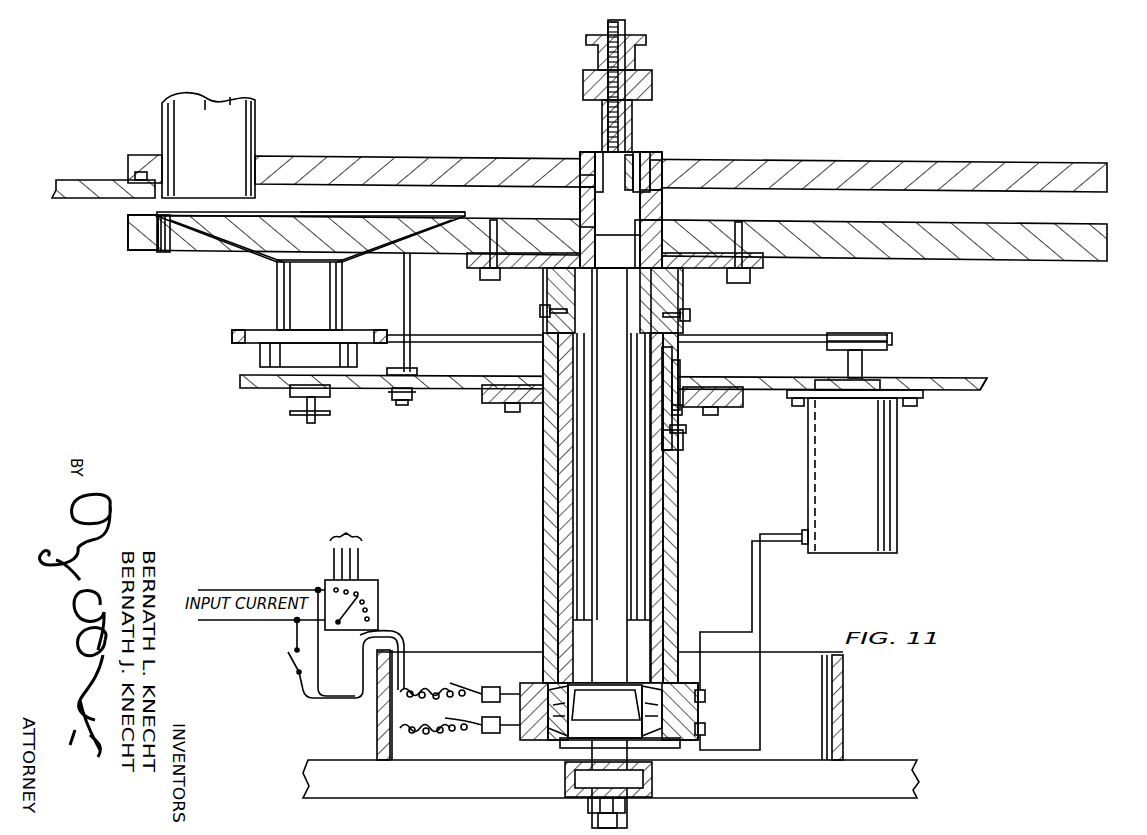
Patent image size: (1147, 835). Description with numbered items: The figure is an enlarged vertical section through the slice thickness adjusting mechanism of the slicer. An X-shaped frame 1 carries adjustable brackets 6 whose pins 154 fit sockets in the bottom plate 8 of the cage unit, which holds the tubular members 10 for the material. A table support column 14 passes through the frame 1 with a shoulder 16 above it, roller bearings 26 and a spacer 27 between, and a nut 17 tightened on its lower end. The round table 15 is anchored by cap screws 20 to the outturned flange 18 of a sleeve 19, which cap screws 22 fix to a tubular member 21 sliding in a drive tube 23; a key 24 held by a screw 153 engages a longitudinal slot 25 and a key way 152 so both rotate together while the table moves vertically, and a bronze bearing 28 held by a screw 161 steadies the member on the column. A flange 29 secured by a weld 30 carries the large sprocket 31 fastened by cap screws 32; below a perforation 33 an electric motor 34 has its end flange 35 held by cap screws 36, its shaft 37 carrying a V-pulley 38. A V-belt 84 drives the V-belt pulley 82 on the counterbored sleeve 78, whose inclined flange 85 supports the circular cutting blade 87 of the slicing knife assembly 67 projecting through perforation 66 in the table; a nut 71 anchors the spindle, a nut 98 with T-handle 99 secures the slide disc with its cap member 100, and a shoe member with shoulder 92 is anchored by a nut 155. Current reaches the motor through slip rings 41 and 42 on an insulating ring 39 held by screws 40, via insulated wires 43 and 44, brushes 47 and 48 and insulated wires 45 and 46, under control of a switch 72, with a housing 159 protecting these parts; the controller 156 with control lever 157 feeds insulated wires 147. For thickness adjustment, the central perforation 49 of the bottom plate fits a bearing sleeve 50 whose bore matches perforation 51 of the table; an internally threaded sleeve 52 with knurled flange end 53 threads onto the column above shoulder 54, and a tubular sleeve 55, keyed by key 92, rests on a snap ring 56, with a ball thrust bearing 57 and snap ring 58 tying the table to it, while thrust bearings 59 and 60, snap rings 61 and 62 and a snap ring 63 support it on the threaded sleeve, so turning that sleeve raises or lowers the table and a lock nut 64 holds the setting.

The X-shaped frame 1 is at (420, 753).
The adjustable brackets 6 is at (90, 200).
The bottom plate 8 is at (135, 155).
The tubular members 10 is at (162, 122).
The table support column 14 is at (626, 25).
The table 15 is at (128, 235).
The shoulder 16 is at (605, 683).
The nut 17 is at (590, 805).
The outturned flange 18 is at (470, 258).
The sleeve 19 is at (547, 292).
The cap screws 20 is at (484, 278).
The tubular member 21 is at (680, 303).
The cap screws 22 is at (540, 312).
The drive tube 23 is at (680, 523).
The key 24 is at (683, 440).
The longitudinal slot 25 is at (682, 415).
The roller bearings 26 is at (640, 736).
The spacer 27 is at (570, 746).
The bronze bearing 28 is at (547, 440).
The flange 29 is at (482, 396).
The weld 30 is at (545, 418).
The large sprocket 31 is at (393, 392).
The cap screws 32 is at (513, 407).
The perforation 33 is at (880, 380).
The electric motor 34 is at (890, 470).
The end flange 35 is at (930, 397).
The cap screws 36 is at (910, 406).
The shaft 37 is at (862, 360).
The V-pulley 38 is at (845, 333).
The insulating ring 39 is at (540, 675).
The screws 40 is at (530, 678).
The slip ring 41 is at (703, 690).
The slip ring 42 is at (705, 725).
The insulated wire 43 is at (752, 565).
The insulated wire 44 is at (760, 565).
The insulated wire 45 is at (432, 688).
The insulated wire 46 is at (442, 727).
The brush 47 is at (470, 678).
The brush 48 is at (470, 720).
The central perforation 49 is at (662, 185).
The bearing sleeve 50 is at (660, 210).
The perforation 51 is at (657, 228).
The internally threaded sleeve 52 is at (602, 105).
The upper flange end 53 is at (583, 72).
The shoulder 54 is at (617, 255).
The tubular sleeve 55 is at (648, 165).
The snap ring 56 is at (582, 160).
The ball thrust bearing 57 is at (547, 272).
The second snap ring 58 is at (660, 282).
The ball thrust bearing 59 is at (590, 170).
The ball thrust bearing 60 is at (582, 175).
The upper snap ring 61 is at (597, 155).
The lower snap ring 62 is at (660, 178).
The snap ring 63 is at (624, 165).
The lock nut 64 is at (647, 40).
The perforation 66 is at (165, 252).
The slicing knife assembly 67 is at (221, 302).
The nut 71 is at (325, 396).
The switch 72 is at (290, 660).
The counterbored sleeve 78 is at (342, 283).
The V-belt pulley 82 is at (348, 330).
The V-belt 84 is at (440, 337).
The inclined flange 85 is at (228, 235).
The circular cutting blade 87 is at (130, 215).
The key 92 is at (403, 370).
The nut 98 is at (290, 405).
The T-handle 99 is at (298, 424).
The cap member 100 is at (380, 212).
The insulated wires 147 is at (348, 544).
The key way 152 is at (665, 395).
The screw 153 is at (686, 432).
The pins 154 is at (136, 176).
The nut 155 is at (412, 400).
The D.C. voltage converter and controller 156 is at (362, 668).
The control lever 157 is at (352, 632).
The housing 159 is at (845, 706).
The screw 161 is at (678, 400).